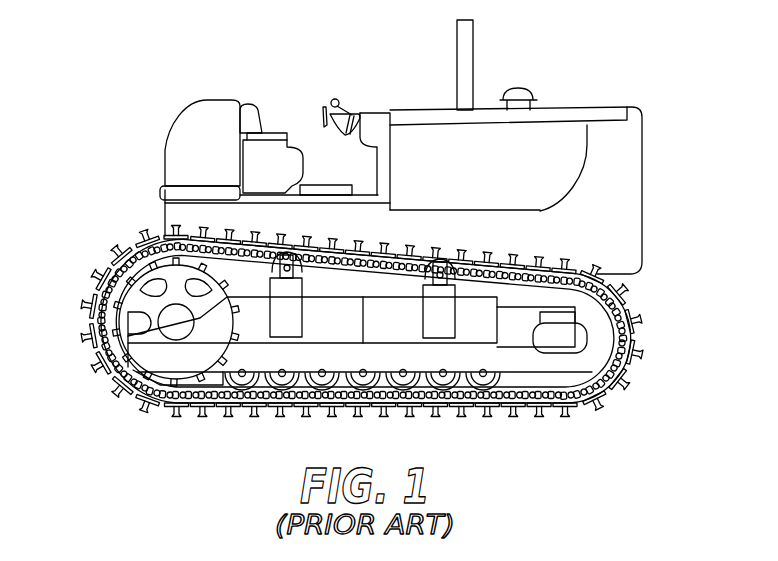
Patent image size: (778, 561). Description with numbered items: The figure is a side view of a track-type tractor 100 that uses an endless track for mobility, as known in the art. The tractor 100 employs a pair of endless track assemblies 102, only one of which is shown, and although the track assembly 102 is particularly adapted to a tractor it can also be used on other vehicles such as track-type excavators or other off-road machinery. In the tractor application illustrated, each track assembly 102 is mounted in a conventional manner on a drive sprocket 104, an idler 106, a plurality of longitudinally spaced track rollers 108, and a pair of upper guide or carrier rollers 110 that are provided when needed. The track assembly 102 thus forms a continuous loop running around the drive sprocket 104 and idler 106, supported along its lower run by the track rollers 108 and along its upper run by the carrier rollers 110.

The track-type tractor 100 is at (125, 53).
The endless track assembly 102 is at (473, 422).
The drive sprocket 104 is at (137, 300).
The idler 106 is at (587, 320).
The track rollers 108 is at (440, 395).
The upper guide or carrier rollers 110 is at (303, 266).